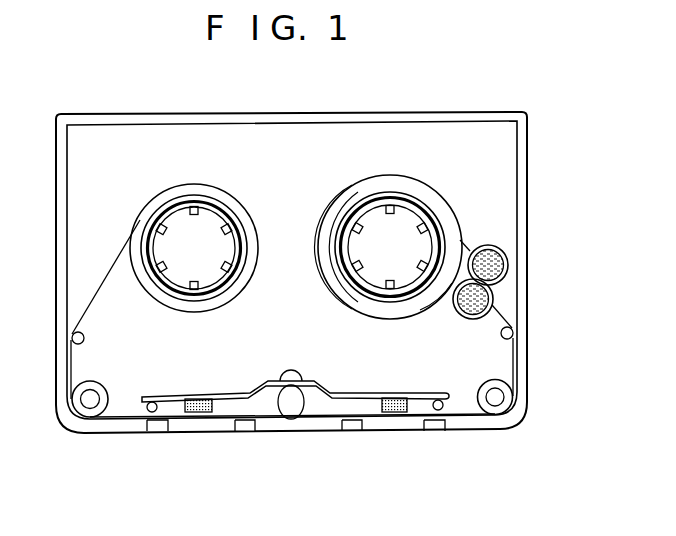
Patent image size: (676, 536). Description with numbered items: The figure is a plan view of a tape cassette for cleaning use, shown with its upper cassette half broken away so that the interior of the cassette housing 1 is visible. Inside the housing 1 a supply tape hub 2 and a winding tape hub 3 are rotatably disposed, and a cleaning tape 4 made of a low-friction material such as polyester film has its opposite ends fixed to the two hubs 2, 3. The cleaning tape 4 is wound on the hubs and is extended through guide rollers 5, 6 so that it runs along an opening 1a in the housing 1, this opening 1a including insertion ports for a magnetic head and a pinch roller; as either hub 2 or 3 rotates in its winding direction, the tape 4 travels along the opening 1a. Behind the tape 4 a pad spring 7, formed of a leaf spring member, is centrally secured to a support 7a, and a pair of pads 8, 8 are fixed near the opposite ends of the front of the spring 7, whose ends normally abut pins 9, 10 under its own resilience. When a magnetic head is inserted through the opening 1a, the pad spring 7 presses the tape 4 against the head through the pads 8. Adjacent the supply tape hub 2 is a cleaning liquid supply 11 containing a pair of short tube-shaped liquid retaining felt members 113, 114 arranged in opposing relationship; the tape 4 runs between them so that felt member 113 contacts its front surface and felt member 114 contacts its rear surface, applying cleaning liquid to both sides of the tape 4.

The cassette housing 1 is at (518, 172).
The opening 1a is at (306, 429).
The supply tape hub 2 is at (425, 215).
The winding tape hub 3 is at (228, 221).
The cleaning tape 4 is at (420, 189).
The guide roller 5 is at (503, 397).
The guide roller 6 is at (85, 401).
The pad spring 7 is at (345, 392).
The support 7a is at (289, 371).
The pad 8 is at (197, 411).
The pin 9 is at (442, 410).
The pin 10 is at (150, 412).
The cleaning liquid supply 11 is at (518, 295).
The liquid retaining felt member 113 is at (505, 270).
The liquid retaining felt member 114 is at (478, 312).